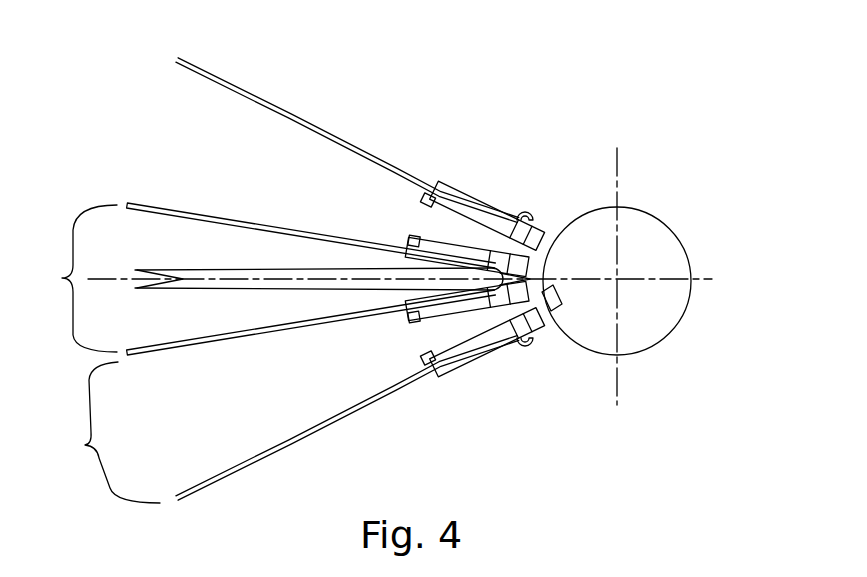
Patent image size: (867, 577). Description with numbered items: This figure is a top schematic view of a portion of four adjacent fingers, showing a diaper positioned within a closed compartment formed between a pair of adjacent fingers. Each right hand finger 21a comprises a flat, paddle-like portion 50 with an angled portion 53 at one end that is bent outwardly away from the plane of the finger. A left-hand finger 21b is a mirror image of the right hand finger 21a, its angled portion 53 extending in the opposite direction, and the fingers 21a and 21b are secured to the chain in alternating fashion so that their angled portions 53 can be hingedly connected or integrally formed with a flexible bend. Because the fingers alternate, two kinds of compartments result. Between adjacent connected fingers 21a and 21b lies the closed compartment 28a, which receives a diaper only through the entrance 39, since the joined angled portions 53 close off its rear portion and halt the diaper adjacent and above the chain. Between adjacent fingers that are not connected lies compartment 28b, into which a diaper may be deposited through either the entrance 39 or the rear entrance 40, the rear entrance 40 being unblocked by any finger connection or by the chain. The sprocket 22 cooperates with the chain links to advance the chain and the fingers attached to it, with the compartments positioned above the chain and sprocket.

The sprocket 22 is at (660, 223).
The closed compartment 28a is at (286, 147).
The compartment 28b is at (295, 418).
The right hand finger 21a is at (297, 226).
The left-hand finger 21b is at (182, 357).
The paddle-like portion 50 is at (257, 340).
The angled portion 53 is at (455, 300).
The rear entrance 40 is at (552, 288).
The entrance 39 is at (90, 354).